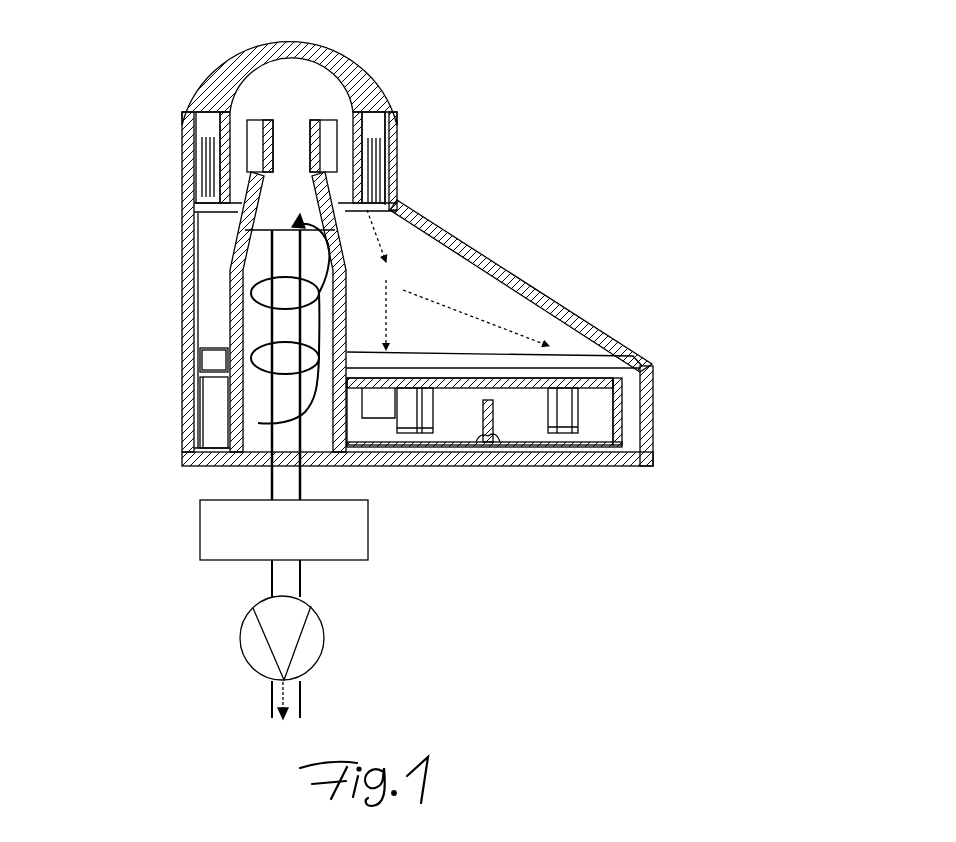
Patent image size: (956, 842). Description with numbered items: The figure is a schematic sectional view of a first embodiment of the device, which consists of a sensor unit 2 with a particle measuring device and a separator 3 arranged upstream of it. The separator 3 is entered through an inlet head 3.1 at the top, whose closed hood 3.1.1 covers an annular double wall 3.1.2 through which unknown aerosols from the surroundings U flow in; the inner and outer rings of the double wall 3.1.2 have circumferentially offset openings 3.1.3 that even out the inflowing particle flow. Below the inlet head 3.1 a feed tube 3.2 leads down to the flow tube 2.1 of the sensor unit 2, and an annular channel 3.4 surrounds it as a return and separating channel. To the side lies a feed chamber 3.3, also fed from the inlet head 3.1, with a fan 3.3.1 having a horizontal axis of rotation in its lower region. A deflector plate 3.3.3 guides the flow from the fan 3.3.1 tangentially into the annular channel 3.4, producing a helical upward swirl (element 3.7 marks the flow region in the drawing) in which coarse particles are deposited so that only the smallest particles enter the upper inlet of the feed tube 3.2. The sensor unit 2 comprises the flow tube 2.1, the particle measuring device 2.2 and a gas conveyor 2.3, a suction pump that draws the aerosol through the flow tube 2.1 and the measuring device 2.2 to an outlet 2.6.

The separator 3 is at (690, 195).
The inlet head 3.1 is at (412, 97).
The dome cover 3.1.1 is at (363, 73).
The annular double wall 3.1.2 is at (183, 122).
The openings 3.1.3 is at (398, 137).
The feed tube 3.2 is at (220, 277).
The feed chamber 3.3 is at (460, 272).
The fan 3.3.1 is at (583, 417).
The deflector plate 3.3.3 is at (248, 402).
The annular channel 3.4 is at (222, 348).
The inner insert 3.7 is at (252, 357).
The sensor unit 2 is at (407, 591).
The flow tube 2.1 is at (270, 480).
The particle measuring device 2.2 is at (200, 540).
The gas conveyor 2.3 is at (238, 642).
The outlet 2.6 is at (268, 697).
The surroundings u is at (158, 70).